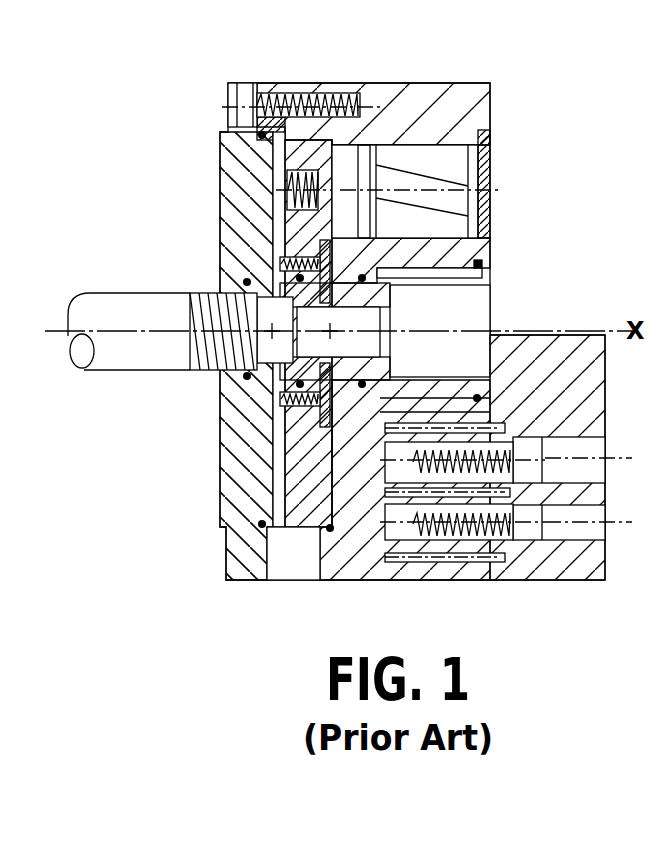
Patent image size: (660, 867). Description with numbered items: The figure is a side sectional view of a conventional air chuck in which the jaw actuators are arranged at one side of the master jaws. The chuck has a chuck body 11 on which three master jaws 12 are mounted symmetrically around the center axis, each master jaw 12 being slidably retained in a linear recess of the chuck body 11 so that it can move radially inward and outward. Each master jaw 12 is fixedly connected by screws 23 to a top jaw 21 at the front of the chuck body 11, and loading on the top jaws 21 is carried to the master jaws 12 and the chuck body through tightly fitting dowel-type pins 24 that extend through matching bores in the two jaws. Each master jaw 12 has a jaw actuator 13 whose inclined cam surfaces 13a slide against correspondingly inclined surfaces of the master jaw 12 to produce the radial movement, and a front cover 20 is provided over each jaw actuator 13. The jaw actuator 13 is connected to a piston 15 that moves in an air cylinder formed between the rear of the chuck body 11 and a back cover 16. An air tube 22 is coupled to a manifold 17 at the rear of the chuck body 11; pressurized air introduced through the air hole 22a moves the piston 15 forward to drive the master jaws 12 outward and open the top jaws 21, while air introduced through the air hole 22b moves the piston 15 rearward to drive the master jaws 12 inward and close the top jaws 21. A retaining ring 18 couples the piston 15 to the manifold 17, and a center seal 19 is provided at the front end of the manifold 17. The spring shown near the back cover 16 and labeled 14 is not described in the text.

The chuck body 11 is at (490, 83).
The master jaw 12 is at (460, 573).
The jaw actuator 13 is at (404, 160).
The inclined cam surfaces 13a is at (423, 177).
The spring 14 is at (322, 154).
The piston 15 is at (307, 503).
The back cover 16 is at (227, 132).
The manifold 17 is at (212, 297).
The retaining ring 18 is at (330, 397).
The center seal 19 is at (482, 279).
The front cover 20 is at (488, 142).
The top jaw 21 is at (605, 580).
The air tube 22 is at (79, 368).
The air hole 22a is at (258, 362).
The air hole 22b is at (380, 315).
The screws 23 is at (462, 490).
The dowel-type pins 24 is at (477, 398).